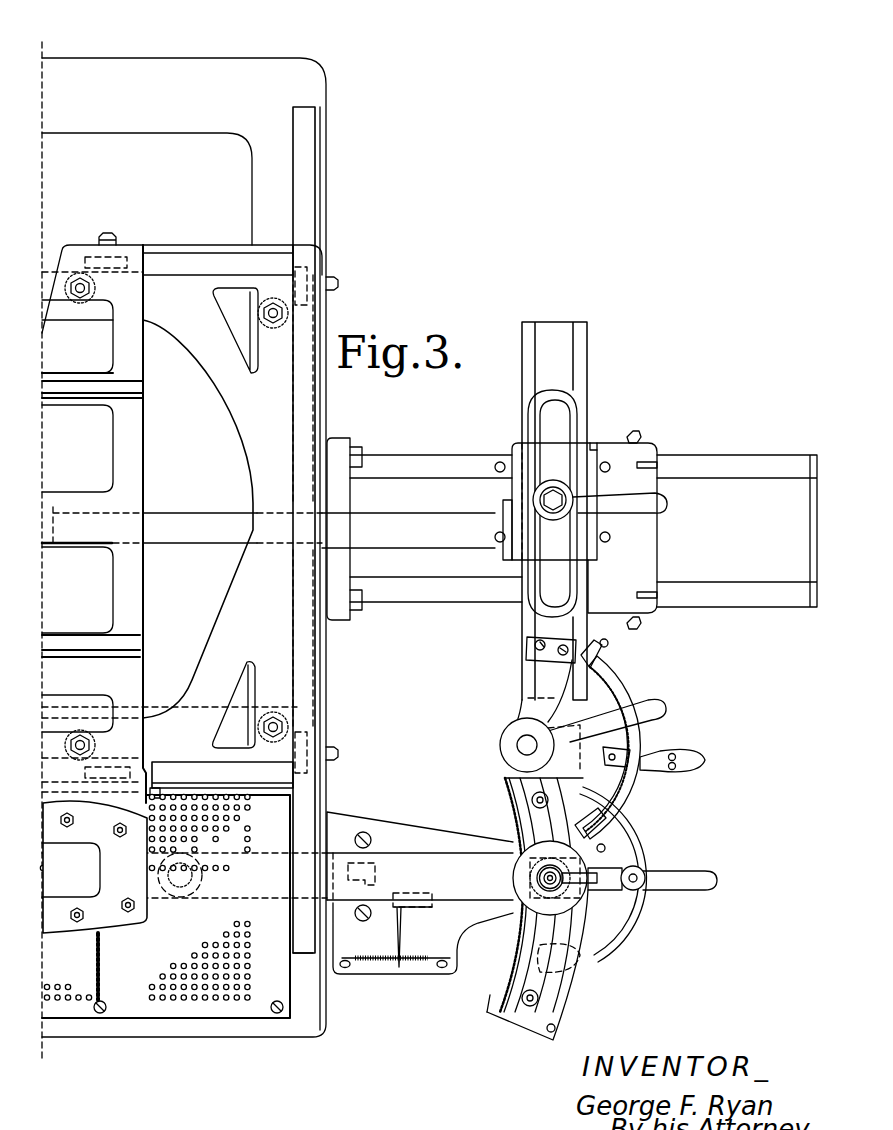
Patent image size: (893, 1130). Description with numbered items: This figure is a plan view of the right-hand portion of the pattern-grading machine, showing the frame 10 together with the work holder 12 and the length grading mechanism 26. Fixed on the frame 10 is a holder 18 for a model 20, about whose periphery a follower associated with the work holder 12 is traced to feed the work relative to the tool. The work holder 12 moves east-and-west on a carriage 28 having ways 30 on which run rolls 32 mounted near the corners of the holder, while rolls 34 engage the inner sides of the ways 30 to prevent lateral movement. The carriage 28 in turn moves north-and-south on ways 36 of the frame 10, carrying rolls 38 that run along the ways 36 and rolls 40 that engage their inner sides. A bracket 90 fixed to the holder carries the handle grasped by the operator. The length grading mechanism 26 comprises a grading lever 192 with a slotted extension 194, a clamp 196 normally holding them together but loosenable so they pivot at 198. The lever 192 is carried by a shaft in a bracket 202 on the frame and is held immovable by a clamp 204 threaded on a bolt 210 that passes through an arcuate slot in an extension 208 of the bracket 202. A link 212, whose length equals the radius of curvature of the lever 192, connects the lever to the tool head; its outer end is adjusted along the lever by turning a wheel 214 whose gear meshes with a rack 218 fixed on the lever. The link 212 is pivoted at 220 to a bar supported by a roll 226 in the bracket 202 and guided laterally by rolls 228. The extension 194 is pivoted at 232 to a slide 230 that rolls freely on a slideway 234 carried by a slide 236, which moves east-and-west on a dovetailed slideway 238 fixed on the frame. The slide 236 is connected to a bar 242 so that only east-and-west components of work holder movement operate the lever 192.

The frame 10 is at (193, 60).
The work holder 12 is at (128, 422).
The holder 18 is at (238, 1010).
The model 20 is at (122, 921).
The length grading mechanism 26 is at (660, 832).
The carriage 28 is at (200, 358).
The ways 30 is at (187, 247).
The rolls 32 is at (118, 257).
The rolls 34 is at (80, 305).
The ways 36 is at (310, 135).
The rolls 38 is at (300, 268).
The rolls 40 is at (273, 330).
The bracket 90 is at (155, 785).
The grading lever 192 is at (507, 787).
The slotted extension 194 is at (542, 667).
The clamp 196 is at (655, 705).
The pivot 198 is at (522, 742).
The bracket 202 is at (415, 830).
The clamp 204 is at (712, 882).
The extension 208 is at (630, 935).
The bolt 210 is at (638, 890).
The link 212 is at (445, 865).
The wheel 214 is at (513, 850).
The rack 218 is at (512, 1013).
The pivot 220 is at (183, 882).
The roll 226 is at (373, 878).
The rolls 228 is at (363, 832).
The slide 230 is at (518, 450).
The pivot 232 is at (545, 500).
The slideway 234 is at (580, 353).
The slide 236 is at (650, 450).
The dovetailed slideway 238 is at (716, 456).
The bar 242 is at (424, 530).